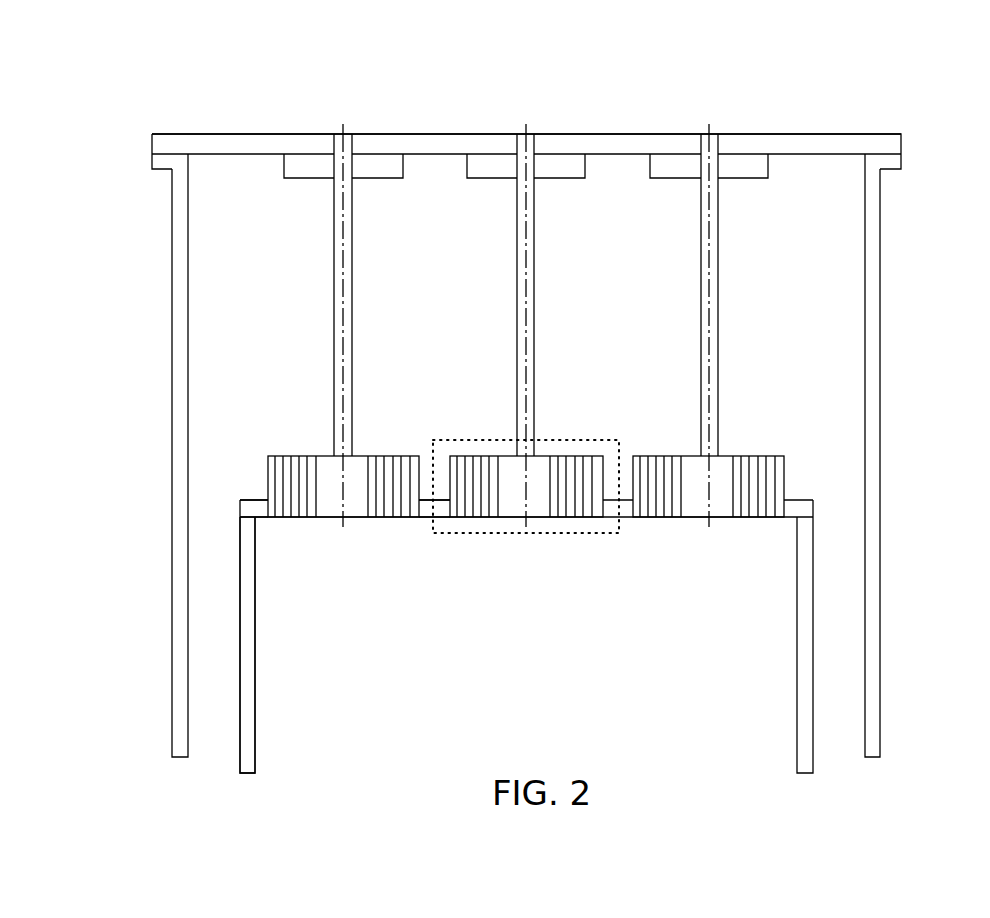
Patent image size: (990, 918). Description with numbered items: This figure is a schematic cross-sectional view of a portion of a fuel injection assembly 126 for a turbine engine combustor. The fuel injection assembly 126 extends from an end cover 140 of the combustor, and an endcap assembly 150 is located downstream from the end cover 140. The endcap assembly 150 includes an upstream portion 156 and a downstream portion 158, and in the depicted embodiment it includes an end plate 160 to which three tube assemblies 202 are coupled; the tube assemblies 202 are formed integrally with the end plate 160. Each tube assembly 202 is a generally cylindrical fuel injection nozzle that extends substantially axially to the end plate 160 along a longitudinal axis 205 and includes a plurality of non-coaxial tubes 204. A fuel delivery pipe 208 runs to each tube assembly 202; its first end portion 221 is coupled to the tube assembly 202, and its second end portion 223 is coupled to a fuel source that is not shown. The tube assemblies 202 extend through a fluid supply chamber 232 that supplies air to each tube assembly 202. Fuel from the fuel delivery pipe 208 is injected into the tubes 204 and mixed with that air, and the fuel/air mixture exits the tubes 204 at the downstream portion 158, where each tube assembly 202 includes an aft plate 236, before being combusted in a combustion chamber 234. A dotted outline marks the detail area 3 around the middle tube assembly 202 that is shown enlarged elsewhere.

The fuel injection assembly 126 is at (186, 80).
The end cover 140 is at (898, 106).
The endcap assembly 150 is at (818, 476).
The upstream portion 156 is at (250, 497).
The downstream portion 158 is at (264, 520).
The end plate 160 is at (428, 510).
The detail region of FIG. 3 is at (542, 535).
The tube assembly 202 is at (366, 403).
The tube 204 is at (750, 455).
The longitudinal axis 205 is at (352, 290).
The fuel delivery pipe 208 is at (350, 118).
The first end portion 221 is at (358, 450).
The second end portion 223 is at (362, 143).
The fluid supply chamber 232 is at (276, 322).
The combustion chamber 234 is at (536, 642).
The aft plate 236 is at (352, 520).